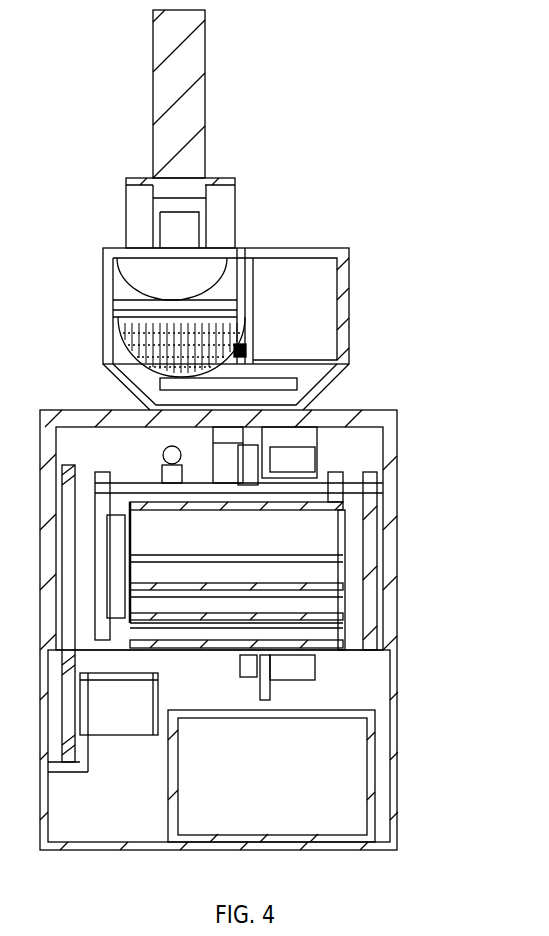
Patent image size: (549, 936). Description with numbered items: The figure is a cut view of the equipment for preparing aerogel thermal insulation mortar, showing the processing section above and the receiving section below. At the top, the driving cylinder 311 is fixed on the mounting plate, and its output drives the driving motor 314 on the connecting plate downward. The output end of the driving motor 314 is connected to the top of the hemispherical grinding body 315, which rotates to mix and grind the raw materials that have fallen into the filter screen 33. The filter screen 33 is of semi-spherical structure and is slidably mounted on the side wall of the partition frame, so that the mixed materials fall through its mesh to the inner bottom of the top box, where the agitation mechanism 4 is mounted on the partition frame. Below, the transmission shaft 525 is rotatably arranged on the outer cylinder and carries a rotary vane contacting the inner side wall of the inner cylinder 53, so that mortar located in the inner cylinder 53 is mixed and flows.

The driving cylinder 311 is at (165, 108).
The driving motor 314 is at (201, 252).
The hemispherical grinding body 315 is at (178, 287).
The filter screen 33 is at (123, 322).
The agitation mechanism 4 is at (237, 350).
The transmission shaft 525 is at (352, 562).
The inner cylinder 53 is at (233, 622).